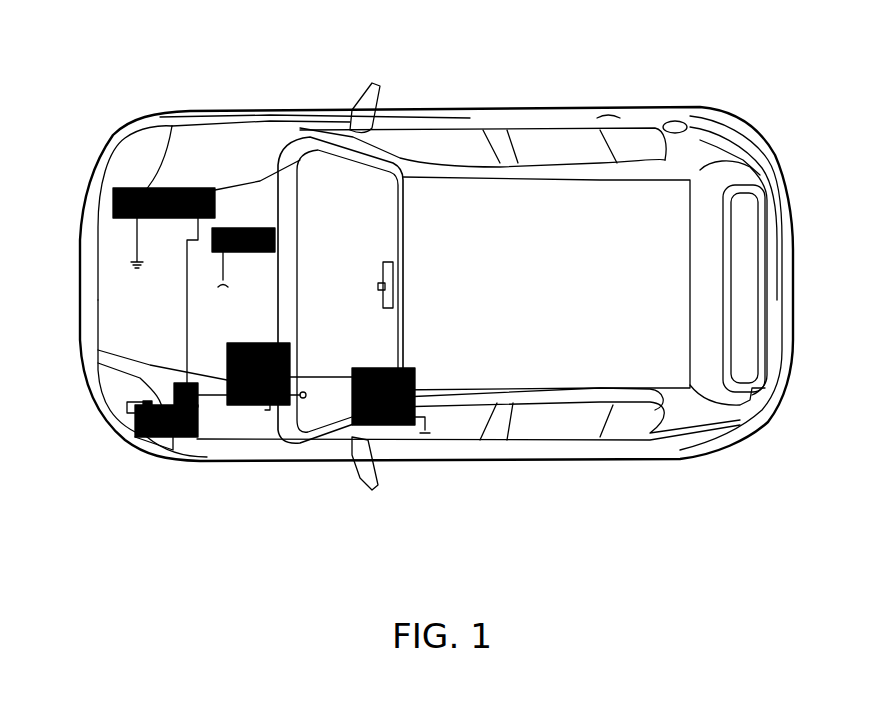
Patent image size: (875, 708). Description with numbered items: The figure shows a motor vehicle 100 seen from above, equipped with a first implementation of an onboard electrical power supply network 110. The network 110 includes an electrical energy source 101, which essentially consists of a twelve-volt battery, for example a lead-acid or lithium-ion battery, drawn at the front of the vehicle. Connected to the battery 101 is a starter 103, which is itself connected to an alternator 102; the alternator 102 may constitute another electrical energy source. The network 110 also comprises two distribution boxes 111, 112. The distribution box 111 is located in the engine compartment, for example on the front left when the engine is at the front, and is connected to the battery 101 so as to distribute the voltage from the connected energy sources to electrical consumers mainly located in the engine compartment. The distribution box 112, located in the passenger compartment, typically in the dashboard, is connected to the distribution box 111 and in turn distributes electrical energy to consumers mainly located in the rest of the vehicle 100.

The motor vehicle 100 is at (755, 135).
The electrical energy source 101 is at (137, 423).
The alternator 102 is at (171, 190).
The starter 103 is at (243, 228).
The onboard electrical power supply network 110 is at (530, 212).
The distribution box 111 is at (253, 405).
The distribution box 112 is at (398, 425).